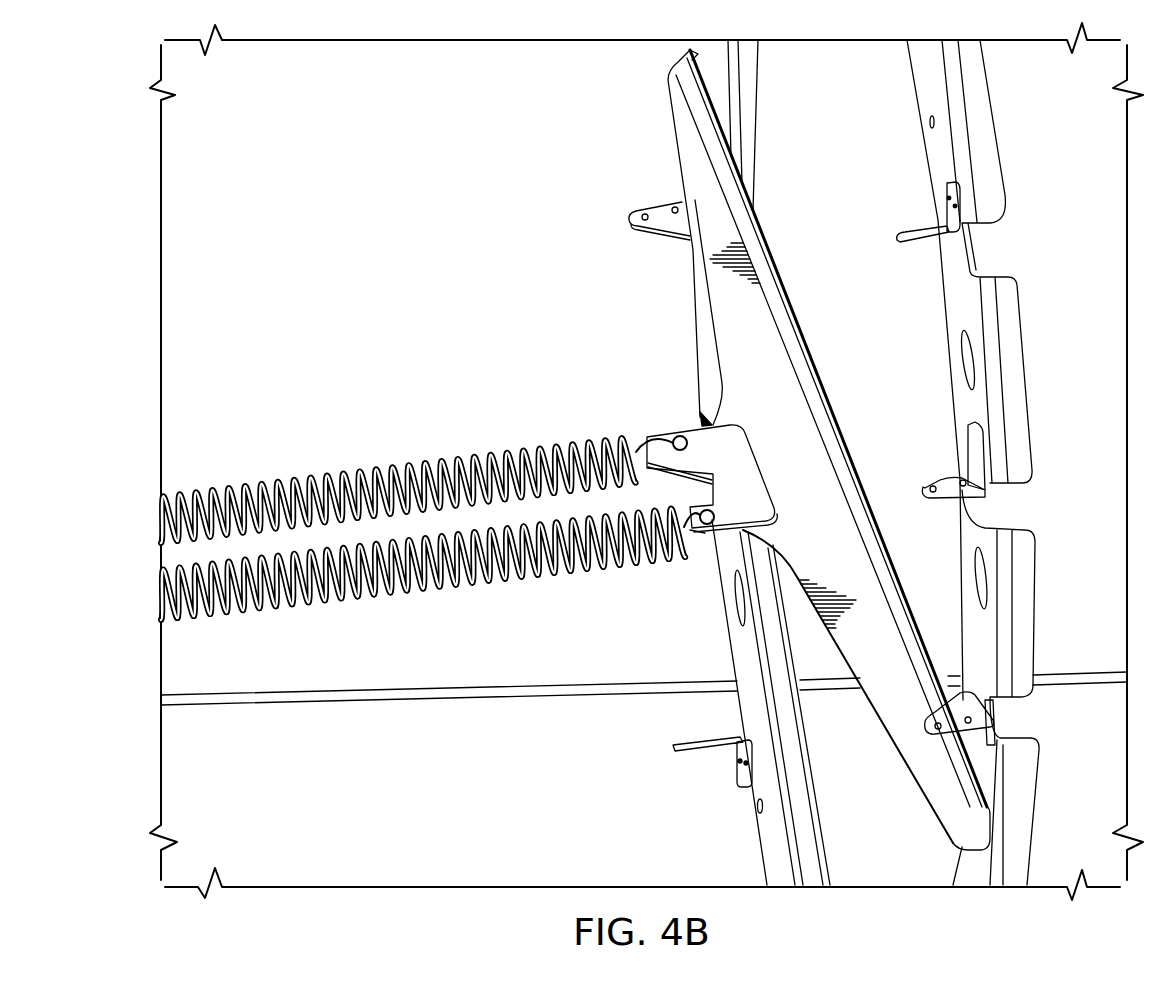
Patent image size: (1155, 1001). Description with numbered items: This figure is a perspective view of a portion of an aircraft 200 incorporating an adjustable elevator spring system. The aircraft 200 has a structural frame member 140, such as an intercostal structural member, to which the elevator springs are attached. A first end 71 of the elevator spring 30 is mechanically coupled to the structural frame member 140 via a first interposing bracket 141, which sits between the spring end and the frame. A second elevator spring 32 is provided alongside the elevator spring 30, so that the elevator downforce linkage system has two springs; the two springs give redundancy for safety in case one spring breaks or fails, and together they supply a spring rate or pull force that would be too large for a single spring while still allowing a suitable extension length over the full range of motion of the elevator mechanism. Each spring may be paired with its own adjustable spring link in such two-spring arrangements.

The structural frame member 140 is at (760, 332).
The first interposing bracket 141 is at (737, 440).
The aircraft 200 is at (615, 346).
The elevator spring 32 is at (410, 467).
The elevator spring 30 is at (432, 580).
The first end 71 is at (693, 533).